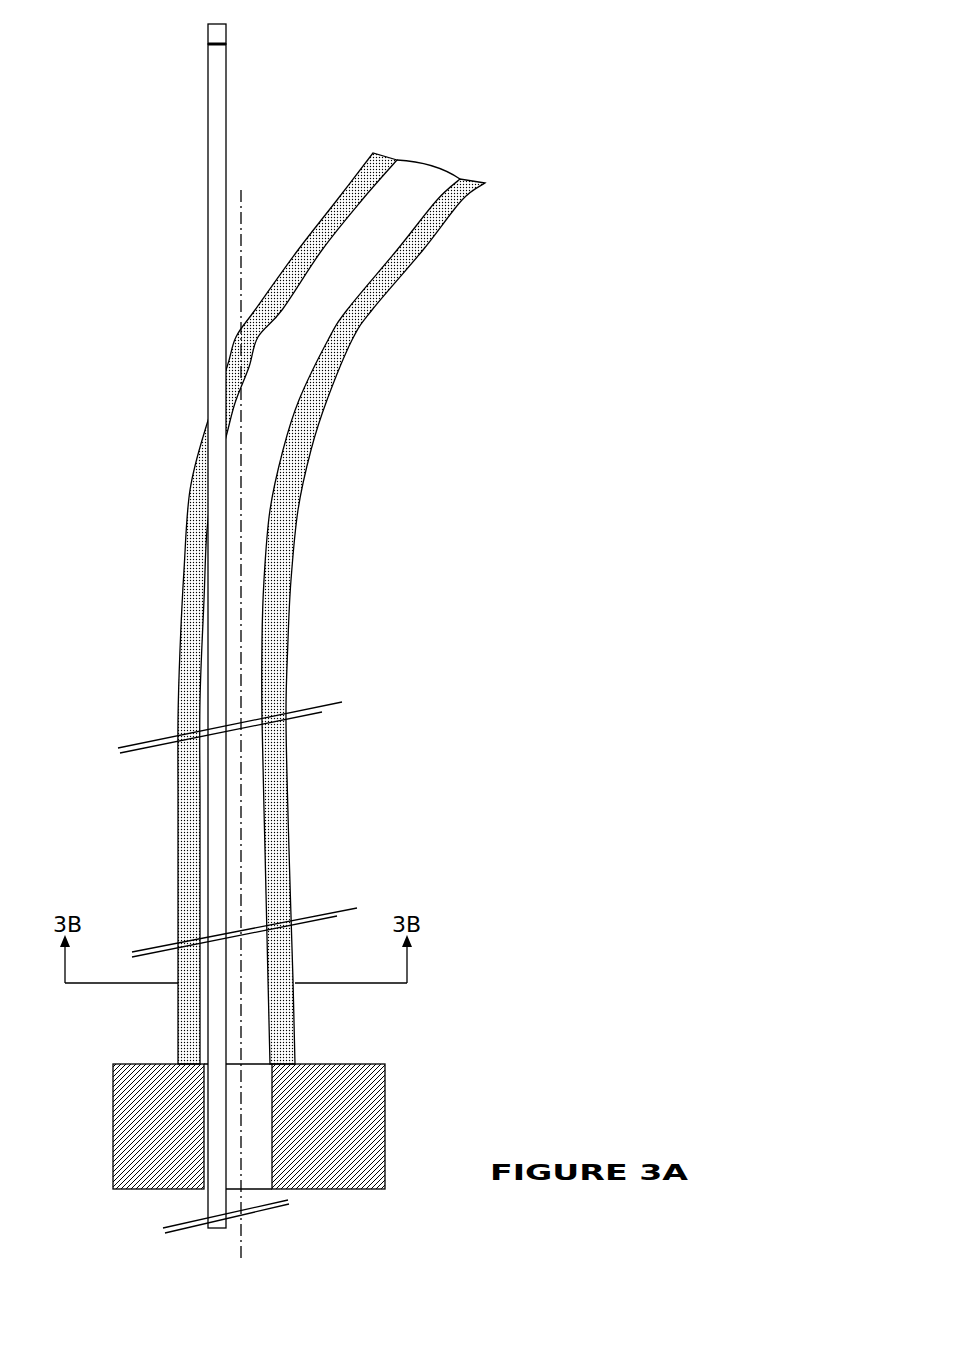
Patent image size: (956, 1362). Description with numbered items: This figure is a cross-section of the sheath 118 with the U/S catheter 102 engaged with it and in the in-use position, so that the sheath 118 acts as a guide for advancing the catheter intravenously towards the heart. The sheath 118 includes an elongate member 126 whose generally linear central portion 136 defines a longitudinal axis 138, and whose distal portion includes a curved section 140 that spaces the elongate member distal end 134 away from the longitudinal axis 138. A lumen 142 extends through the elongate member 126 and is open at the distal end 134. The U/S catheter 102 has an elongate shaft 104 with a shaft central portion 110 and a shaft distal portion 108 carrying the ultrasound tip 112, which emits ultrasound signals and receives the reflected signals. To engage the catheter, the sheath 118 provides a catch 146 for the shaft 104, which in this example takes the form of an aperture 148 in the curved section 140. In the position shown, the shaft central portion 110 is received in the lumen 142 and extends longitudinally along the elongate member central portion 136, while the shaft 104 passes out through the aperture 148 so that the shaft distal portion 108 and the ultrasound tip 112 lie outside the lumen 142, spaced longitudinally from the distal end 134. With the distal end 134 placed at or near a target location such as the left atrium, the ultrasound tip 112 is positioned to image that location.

The U/S catheter 102 is at (198, 280).
The elongate shaft 104 is at (206, 188).
The shaft distal portion 108 is at (236, 132).
The shaft central portion 110 is at (206, 877).
The ultrasound tip 112 is at (227, 28).
The sheath 118 is at (313, 478).
The elongate member 126 is at (292, 567).
The elongate member distal end 134 is at (462, 178).
The elongate member central portion 136 is at (303, 868).
The longitudinal axis 138 is at (242, 1233).
The curved section 140 is at (328, 415).
The lumen 142 is at (290, 375).
The catch 146 is at (198, 467).
The aperture 148 is at (227, 608).